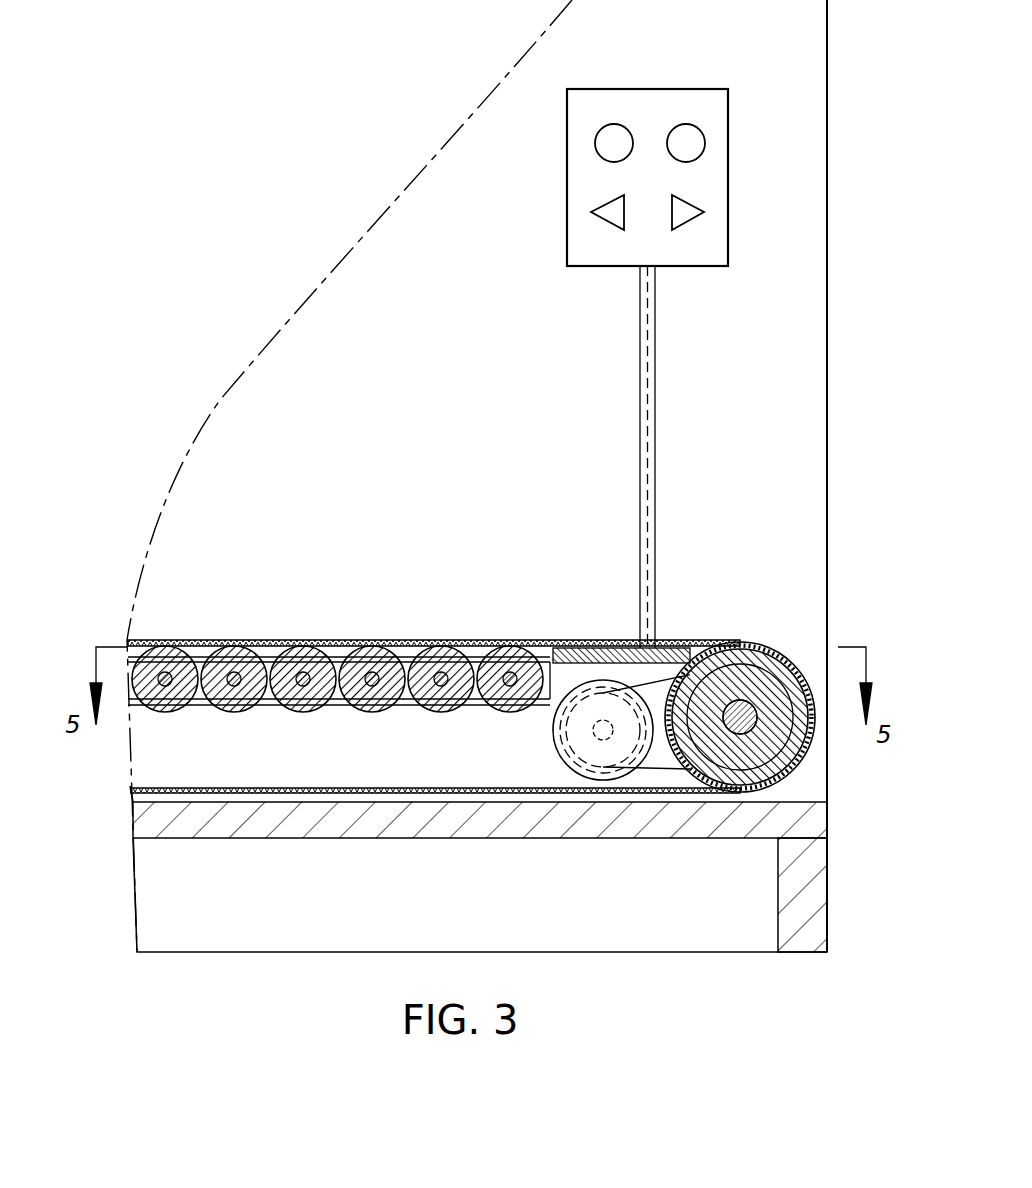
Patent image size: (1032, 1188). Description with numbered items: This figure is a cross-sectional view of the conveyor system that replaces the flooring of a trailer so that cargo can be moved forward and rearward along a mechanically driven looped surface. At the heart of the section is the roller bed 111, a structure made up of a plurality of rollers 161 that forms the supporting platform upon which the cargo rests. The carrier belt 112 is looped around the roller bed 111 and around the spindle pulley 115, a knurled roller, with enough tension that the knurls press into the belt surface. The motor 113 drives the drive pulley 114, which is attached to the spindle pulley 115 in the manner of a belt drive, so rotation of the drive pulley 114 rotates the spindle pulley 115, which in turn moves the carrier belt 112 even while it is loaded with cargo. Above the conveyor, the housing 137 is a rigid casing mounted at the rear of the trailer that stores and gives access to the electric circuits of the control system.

The roller bed 111 is at (110, 627).
The carrier belt 112 is at (300, 640).
The motor 113 is at (597, 750).
The drive pulley 114 is at (662, 700).
The spindle pulley 115 is at (790, 667).
The housing 137 is at (728, 139).
The plurality of rollers 161 is at (392, 707).